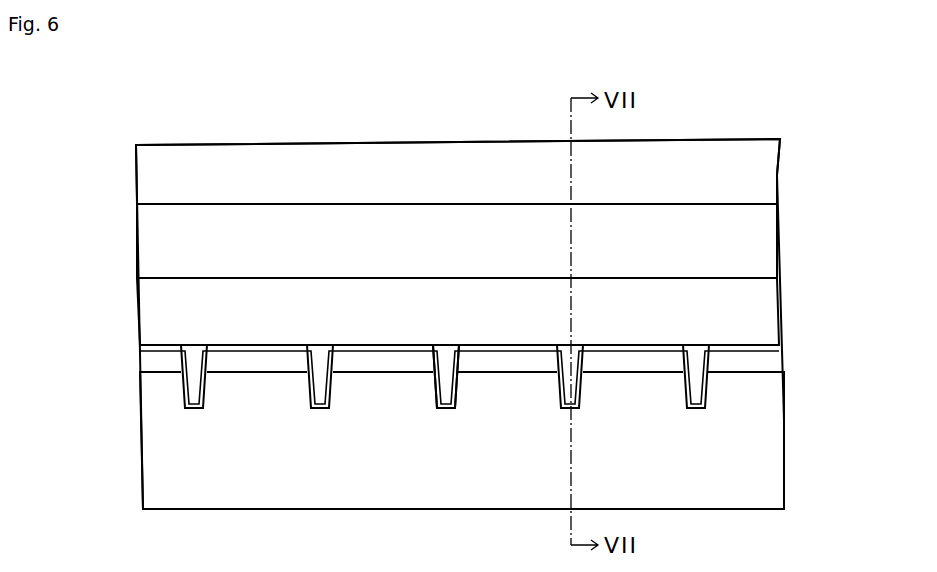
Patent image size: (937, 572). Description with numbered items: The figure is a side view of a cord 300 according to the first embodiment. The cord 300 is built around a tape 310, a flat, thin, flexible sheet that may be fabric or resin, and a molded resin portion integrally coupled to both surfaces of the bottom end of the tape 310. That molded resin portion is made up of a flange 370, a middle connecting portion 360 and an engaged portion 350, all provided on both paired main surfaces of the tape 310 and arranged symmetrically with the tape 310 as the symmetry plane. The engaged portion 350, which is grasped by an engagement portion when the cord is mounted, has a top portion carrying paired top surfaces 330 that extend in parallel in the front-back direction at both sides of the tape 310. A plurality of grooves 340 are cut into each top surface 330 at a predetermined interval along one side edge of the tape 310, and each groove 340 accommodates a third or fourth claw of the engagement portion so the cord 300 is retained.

The cord 300 is at (177, 118).
The tape 310 is at (160, 158).
The flange 370 is at (160, 236).
The middle connecting portion 360 is at (160, 316).
The top surface 330 is at (745, 346).
The groove 340 is at (443, 352).
The engaged portion 350 is at (160, 468).